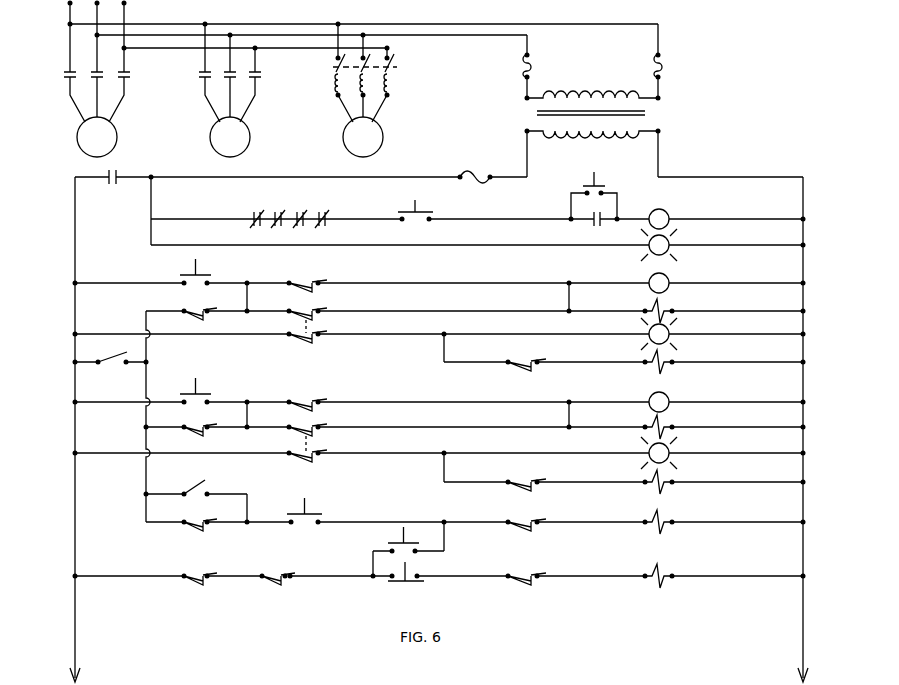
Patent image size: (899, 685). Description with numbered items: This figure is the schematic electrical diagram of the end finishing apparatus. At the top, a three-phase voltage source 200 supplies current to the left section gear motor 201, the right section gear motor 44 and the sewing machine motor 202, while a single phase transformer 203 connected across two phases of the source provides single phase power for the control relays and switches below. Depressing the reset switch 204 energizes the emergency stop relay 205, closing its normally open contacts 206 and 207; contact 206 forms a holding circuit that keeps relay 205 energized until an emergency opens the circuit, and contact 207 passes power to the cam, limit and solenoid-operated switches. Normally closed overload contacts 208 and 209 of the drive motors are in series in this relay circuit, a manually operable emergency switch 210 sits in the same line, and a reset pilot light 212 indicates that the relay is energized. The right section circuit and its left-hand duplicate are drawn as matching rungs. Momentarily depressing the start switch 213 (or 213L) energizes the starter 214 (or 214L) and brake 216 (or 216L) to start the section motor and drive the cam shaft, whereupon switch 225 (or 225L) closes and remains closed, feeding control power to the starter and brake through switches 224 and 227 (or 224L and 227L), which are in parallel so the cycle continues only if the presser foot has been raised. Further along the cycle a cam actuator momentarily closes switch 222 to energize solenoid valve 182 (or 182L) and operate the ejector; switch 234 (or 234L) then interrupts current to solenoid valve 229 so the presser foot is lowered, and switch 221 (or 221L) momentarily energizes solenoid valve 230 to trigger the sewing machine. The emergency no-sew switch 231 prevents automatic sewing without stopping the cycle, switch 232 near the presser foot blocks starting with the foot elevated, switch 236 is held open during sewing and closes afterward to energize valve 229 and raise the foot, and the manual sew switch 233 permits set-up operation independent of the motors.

The three-phase voltage source 200 is at (70, 3).
The left section gear motor 201 is at (108, 146).
The right section gear motor 44 is at (240, 146).
The sewing machine motor 202 is at (374, 146).
The single phase transformer 203 is at (648, 113).
The reset switch 204 is at (595, 176).
The emergency stop relay 205 is at (667, 213).
The normally open contact 206 is at (590, 228).
The normally open contact 207 is at (117, 172).
The normally closed contact 208 is at (268, 229).
The normally closed contact 209 is at (311, 229).
The emergency switch 210 is at (415, 203).
The reset pilot light 212 is at (671, 245).
The start switch 213L is at (200, 270).
The start switch 213 is at (200, 390).
The starter 214L is at (670, 280).
The starter 214 is at (670, 398).
The brake 216L is at (666, 306).
The brake 216 is at (666, 422).
The solenoid valve 182L is at (668, 357).
The solenoid valve 182 is at (668, 488).
The switch 221L is at (204, 481).
The switch 221 is at (190, 531).
The switch 222 is at (522, 478).
The switch 224L is at (302, 280).
The switch 224 is at (302, 399).
The switch 225L is at (198, 319).
The switch 225 is at (198, 435).
The switch 227L is at (320, 322).
The switch 227 is at (320, 438).
The solenoid valve 229 is at (668, 583).
The solenoid valve 230 is at (668, 530).
The emergency no-sew switch 231 is at (307, 508).
The switch 232 is at (522, 518).
The sew switch 233 is at (402, 535).
The switch 234 is at (190, 585).
The switch 234L is at (275, 585).
The switch 236 is at (522, 572).